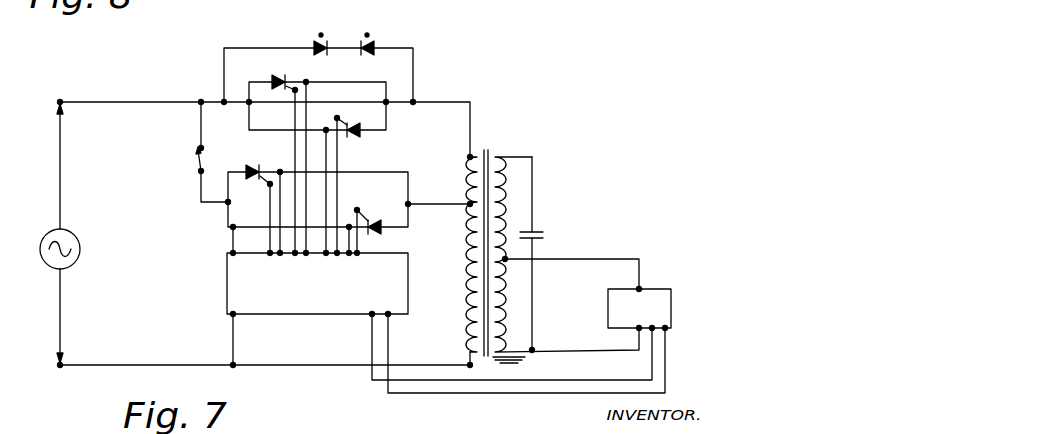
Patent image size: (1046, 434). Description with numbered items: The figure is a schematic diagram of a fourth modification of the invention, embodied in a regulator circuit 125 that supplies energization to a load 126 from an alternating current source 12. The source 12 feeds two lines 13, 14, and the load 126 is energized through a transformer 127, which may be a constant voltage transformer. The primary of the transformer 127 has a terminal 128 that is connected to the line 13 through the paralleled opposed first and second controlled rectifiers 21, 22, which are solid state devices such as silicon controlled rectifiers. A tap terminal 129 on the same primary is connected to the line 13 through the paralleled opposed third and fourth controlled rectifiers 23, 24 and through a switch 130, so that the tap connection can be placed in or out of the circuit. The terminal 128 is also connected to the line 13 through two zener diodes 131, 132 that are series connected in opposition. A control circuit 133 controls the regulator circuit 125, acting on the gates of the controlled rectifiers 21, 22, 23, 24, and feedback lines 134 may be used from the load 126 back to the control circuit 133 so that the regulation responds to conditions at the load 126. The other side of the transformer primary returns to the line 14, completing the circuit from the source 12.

The alternating current source 12 is at (76, 238).
The line 13 is at (125, 101).
The line 14 is at (95, 364).
The first controlled rectifier 21 is at (272, 80).
The second controlled rectifier 22 is at (350, 124).
The third controlled rectifier 23 is at (257, 167).
The fourth controlled rectifier 24 is at (374, 219).
The regulator circuit 125 is at (124, 266).
The load 126 is at (673, 312).
The transformer 127 is at (486, 155).
The terminal 128 is at (472, 156).
The tap terminal 129 is at (468, 203).
The switch 130 is at (199, 157).
The zener diode 131 is at (314, 46).
The zener diode 132 is at (375, 47).
The control circuit 133 is at (226, 288).
The feedback lines 134 is at (519, 372).